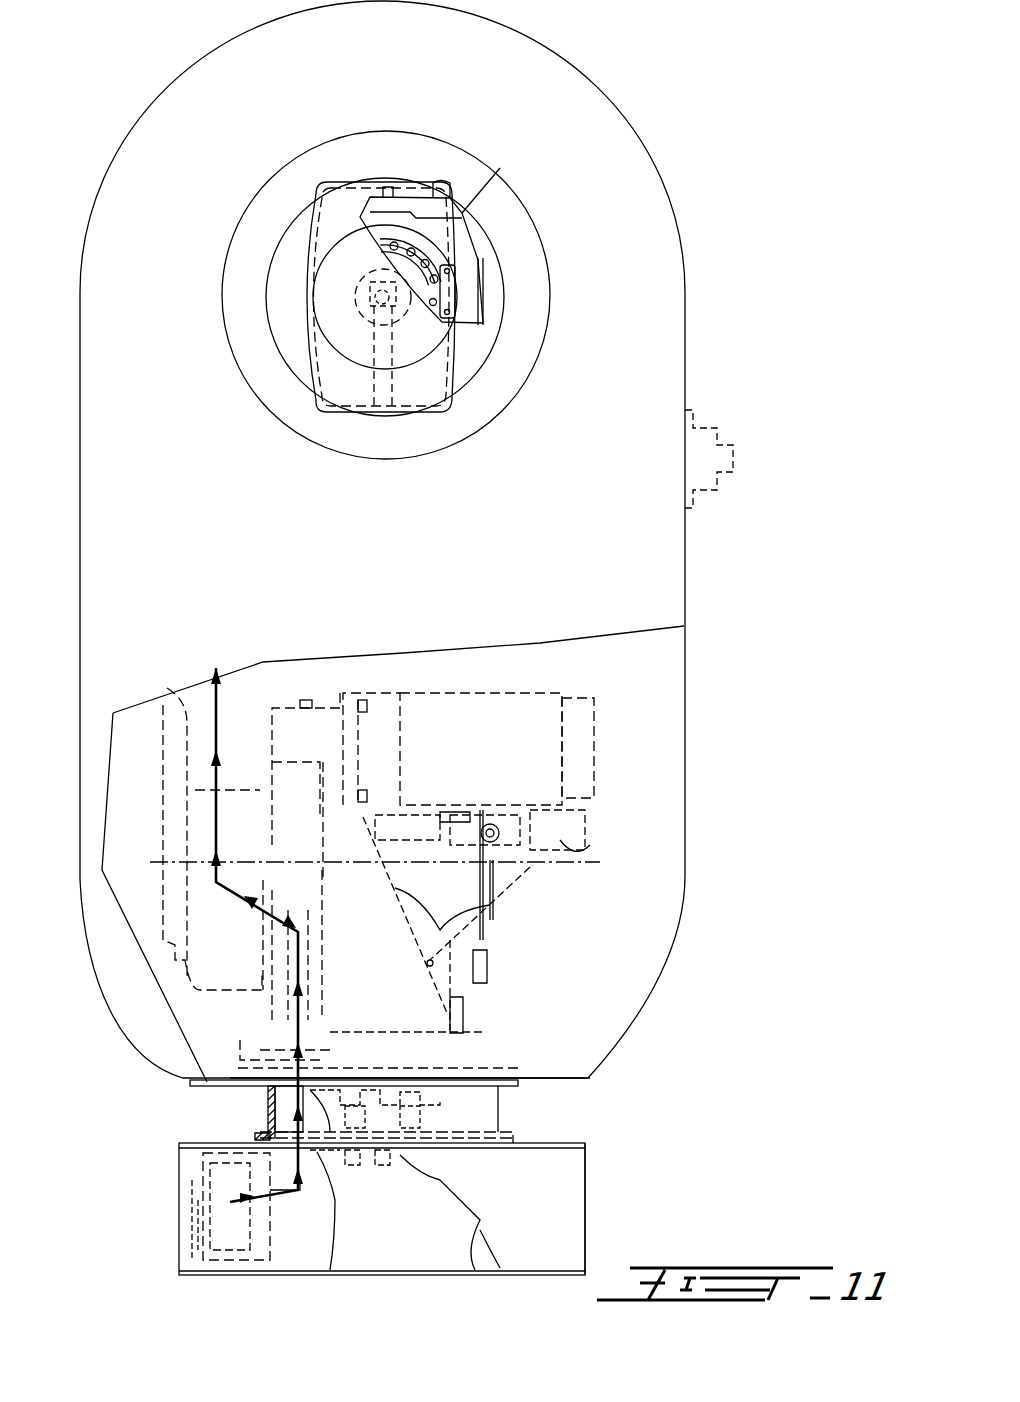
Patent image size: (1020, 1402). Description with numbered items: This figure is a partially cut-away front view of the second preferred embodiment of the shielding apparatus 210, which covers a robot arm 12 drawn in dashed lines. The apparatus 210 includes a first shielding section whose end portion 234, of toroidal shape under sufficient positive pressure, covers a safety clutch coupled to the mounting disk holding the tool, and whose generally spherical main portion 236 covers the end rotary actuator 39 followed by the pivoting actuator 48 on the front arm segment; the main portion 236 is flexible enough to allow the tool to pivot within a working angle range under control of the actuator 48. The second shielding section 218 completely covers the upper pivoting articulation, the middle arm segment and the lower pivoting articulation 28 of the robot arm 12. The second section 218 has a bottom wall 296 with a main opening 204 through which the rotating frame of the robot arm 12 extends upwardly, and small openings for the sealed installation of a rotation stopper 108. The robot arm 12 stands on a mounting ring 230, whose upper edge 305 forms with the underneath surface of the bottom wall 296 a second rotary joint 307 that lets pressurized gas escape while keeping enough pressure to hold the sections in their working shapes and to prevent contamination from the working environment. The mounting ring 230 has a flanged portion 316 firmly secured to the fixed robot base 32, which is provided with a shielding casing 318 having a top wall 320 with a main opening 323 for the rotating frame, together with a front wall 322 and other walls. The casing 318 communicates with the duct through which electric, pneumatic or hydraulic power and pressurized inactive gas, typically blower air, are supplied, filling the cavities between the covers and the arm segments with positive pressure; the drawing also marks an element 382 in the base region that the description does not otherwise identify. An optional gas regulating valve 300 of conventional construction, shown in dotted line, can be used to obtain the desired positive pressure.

The shielding apparatus 210 is at (125, 105).
The second shielding section 218 is at (435, 50).
The main portion 236 is at (420, 162).
The end rotary actuator 39 is at (407, 270).
The pivoting actuator 48 is at (450, 288).
The gas regulating valve 300 is at (700, 442).
The end portion 234 is at (285, 313).
The robot arm 12 is at (600, 729).
The lower pivoting articulation 28 is at (306, 890).
The main opening 204 is at (480, 1064).
The rotation stopper 108 is at (560, 1078).
The mounting ring 230 is at (500, 1112).
The top wall 320 is at (573, 1142).
The fixed robot base 32 is at (540, 1203).
The shielding casing 318 is at (592, 1237).
The main opening 323 is at (317, 1152).
The inlet passage 382 is at (270, 1190).
The front wall 322 is at (500, 1247).
The bottom wall 296 is at (265, 1086).
The second rotary joint 307 is at (265, 1097).
The upper edge 305 is at (268, 1110).
The flanged portion 316 is at (258, 1138).